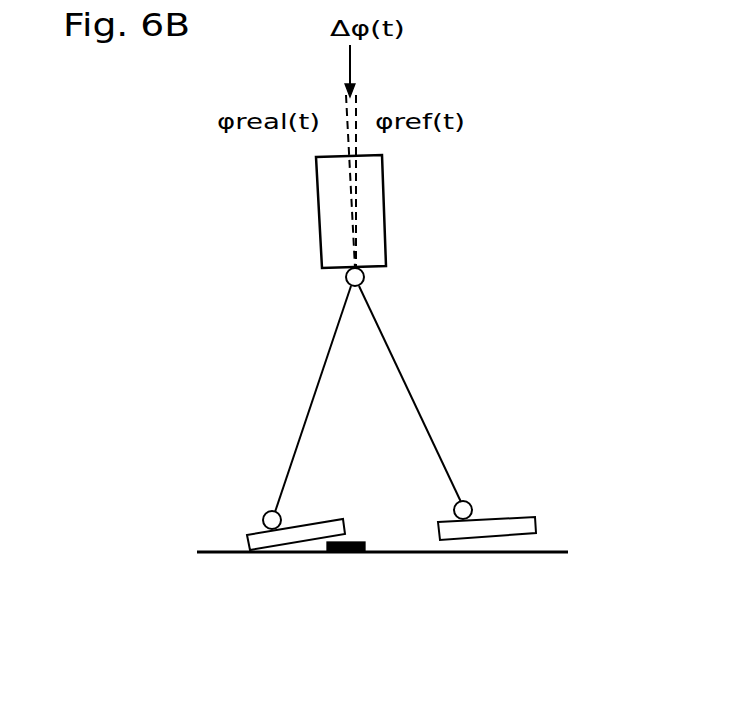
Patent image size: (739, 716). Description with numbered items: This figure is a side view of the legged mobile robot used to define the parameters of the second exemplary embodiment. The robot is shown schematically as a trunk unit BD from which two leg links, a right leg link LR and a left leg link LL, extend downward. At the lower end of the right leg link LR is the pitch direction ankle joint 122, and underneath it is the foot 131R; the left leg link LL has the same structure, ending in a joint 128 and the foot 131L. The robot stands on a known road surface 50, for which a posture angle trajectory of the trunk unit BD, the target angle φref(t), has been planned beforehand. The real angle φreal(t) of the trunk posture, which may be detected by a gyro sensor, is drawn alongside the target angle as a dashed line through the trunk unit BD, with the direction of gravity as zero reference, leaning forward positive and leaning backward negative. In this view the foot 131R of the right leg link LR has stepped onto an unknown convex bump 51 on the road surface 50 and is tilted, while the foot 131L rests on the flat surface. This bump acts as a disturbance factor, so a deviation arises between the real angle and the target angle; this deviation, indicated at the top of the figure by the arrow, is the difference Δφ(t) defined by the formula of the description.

The trunk unit BD is at (383, 200).
The right leg link LR is at (311, 367).
The left leg link LL is at (406, 362).
The pitch direction ankle joint 122 is at (265, 512).
The joint of left leg link 128 is at (465, 501).
The foot 131R is at (318, 519).
The foot 131L is at (510, 518).
The known road surface 50 is at (208, 550).
The unknown convex bump 51 is at (360, 553).